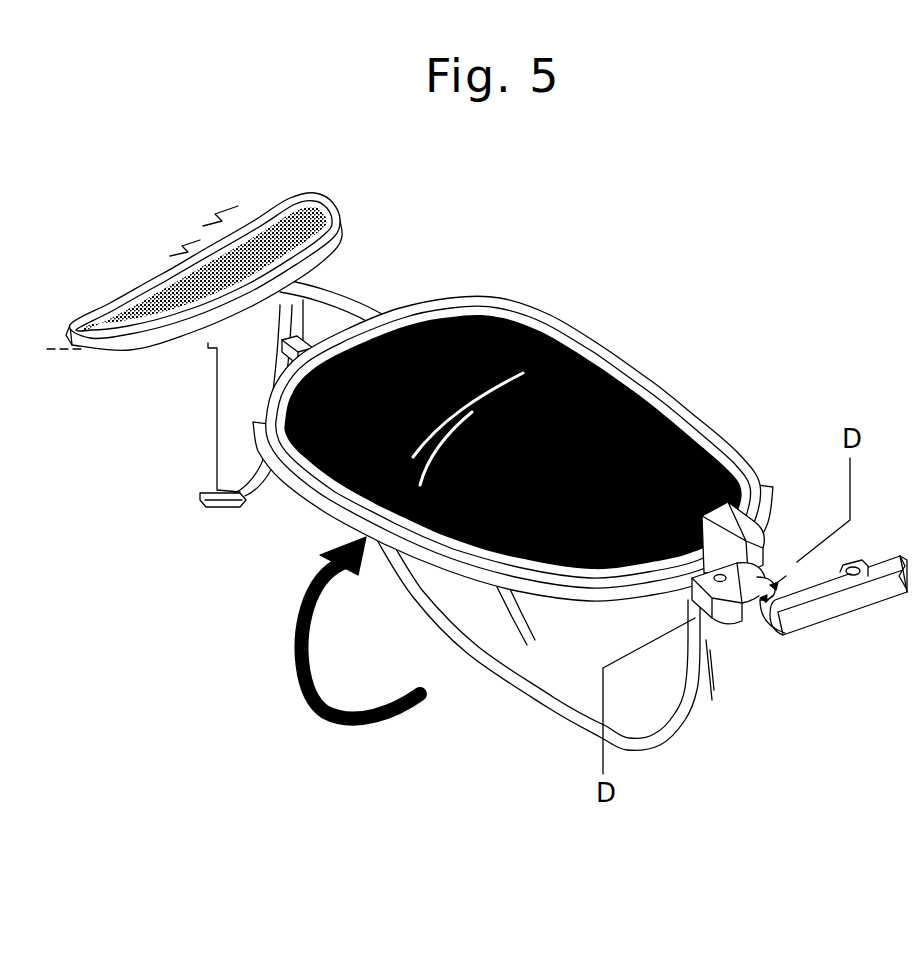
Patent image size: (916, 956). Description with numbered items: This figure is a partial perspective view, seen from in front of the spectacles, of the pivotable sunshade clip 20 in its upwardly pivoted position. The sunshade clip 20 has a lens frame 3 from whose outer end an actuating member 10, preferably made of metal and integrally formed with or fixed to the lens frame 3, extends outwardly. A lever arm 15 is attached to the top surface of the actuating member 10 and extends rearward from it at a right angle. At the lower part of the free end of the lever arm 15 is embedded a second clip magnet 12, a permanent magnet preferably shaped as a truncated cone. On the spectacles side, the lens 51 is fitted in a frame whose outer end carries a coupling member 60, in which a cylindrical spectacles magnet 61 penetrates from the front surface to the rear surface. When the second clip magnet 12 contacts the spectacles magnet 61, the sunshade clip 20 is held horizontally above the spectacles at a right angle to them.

The lens frame 3 is at (545, 328).
The actuating member 10 is at (733, 523).
The second clip magnet 12 is at (843, 575).
The lever arm 15 is at (778, 574).
The pivotable sunshade clip 20 is at (105, 374).
The lens 51 is at (530, 702).
The coupling member 60 is at (718, 630).
The spectacles magnet 61 is at (762, 626).